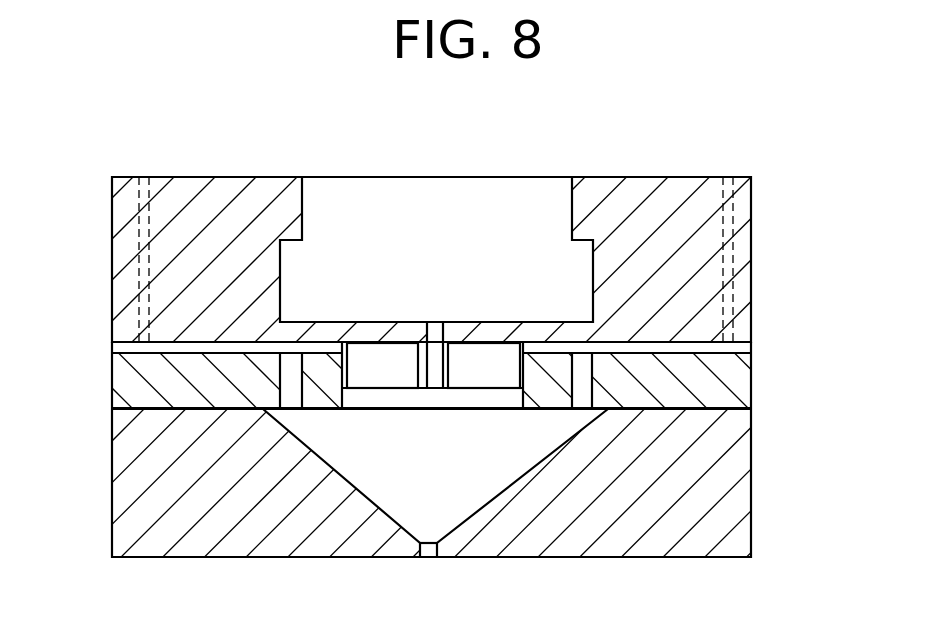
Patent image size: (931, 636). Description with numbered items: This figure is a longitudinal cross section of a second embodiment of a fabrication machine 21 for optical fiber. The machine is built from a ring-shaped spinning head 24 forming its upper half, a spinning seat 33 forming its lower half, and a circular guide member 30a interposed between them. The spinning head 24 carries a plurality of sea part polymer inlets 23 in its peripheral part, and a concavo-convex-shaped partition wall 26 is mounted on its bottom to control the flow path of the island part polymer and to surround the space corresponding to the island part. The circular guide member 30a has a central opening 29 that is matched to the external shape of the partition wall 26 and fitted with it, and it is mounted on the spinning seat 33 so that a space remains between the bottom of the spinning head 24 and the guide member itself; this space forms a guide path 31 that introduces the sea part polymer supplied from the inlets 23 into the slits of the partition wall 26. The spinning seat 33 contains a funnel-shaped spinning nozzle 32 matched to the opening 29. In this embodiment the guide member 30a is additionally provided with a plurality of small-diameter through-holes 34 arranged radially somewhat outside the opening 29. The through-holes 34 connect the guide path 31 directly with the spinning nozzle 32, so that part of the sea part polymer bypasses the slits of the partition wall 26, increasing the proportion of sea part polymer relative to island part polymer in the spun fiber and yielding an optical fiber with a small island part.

The fabrication machine 21 is at (761, 393).
The sea part polymer inlets 23 is at (160, 218).
The ring-shaped spinning head 24 is at (292, 165).
The partition wall 26 is at (399, 405).
The opening 29 is at (518, 388).
The circular guide member 30a is at (150, 400).
The guide path 31 is at (160, 350).
The funnel-shaped spinning nozzle 32 is at (503, 492).
The spinning seat 33 is at (735, 516).
The through-holes 34 is at (302, 388).